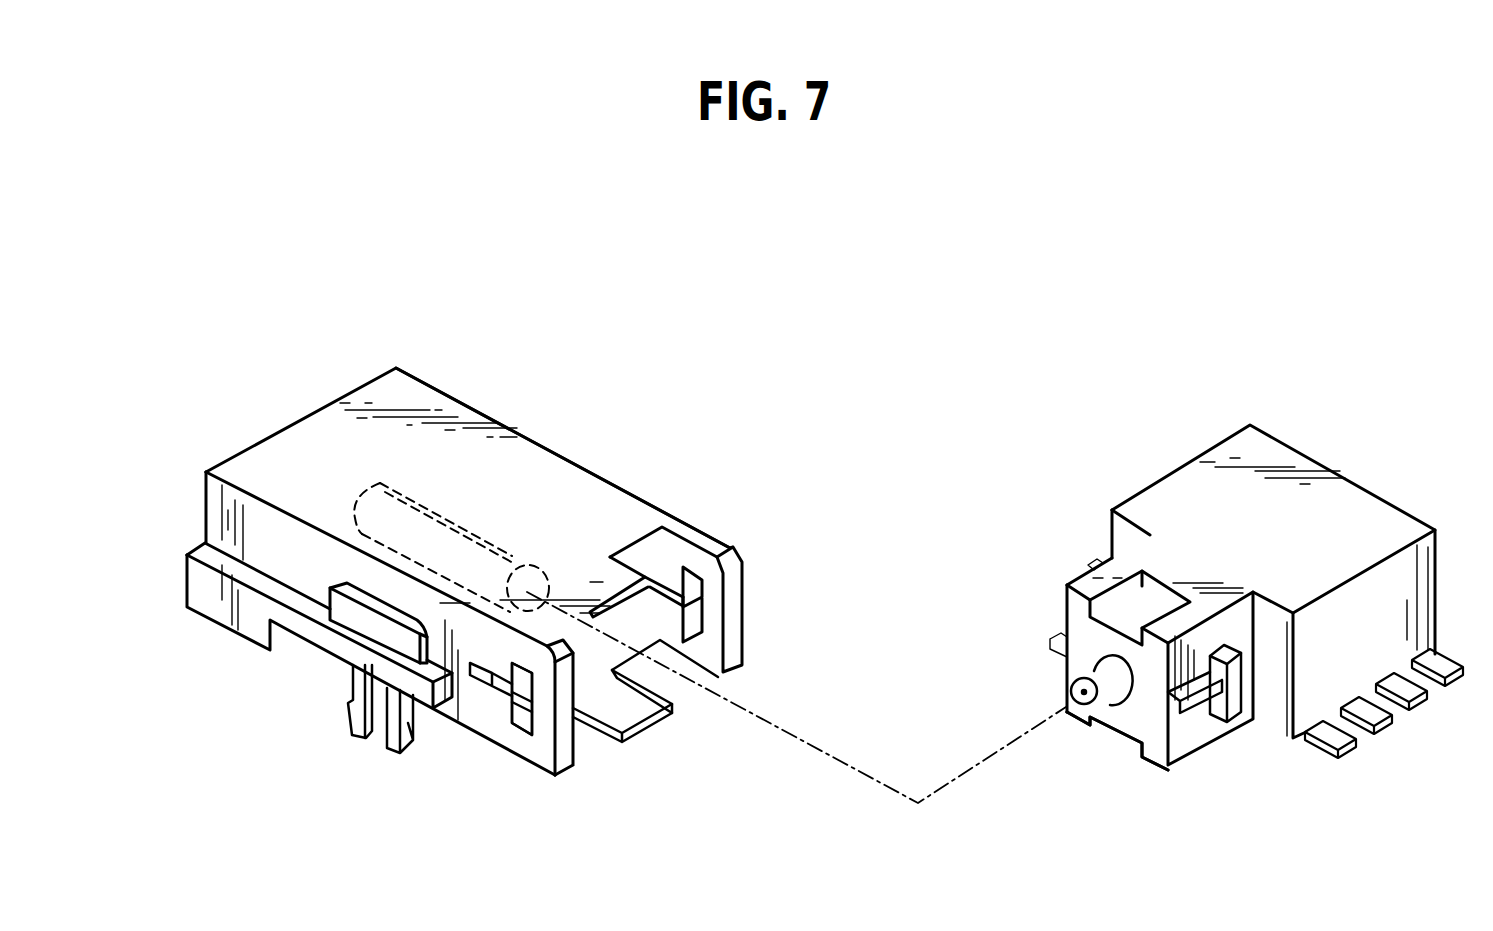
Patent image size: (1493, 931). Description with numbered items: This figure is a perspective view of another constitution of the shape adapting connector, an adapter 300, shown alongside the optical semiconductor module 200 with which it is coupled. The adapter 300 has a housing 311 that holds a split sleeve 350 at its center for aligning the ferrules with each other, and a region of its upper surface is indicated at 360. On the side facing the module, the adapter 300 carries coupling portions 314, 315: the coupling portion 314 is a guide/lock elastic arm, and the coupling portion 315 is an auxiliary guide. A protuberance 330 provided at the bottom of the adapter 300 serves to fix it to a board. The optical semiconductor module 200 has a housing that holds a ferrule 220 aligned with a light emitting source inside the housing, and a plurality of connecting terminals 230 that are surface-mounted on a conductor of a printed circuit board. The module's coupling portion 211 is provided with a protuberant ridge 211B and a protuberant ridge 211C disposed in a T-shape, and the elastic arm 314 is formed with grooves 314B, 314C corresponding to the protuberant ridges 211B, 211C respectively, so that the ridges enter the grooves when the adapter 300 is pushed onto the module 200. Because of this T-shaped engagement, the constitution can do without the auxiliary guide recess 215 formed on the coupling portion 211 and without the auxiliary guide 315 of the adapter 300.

The adapter 300 is at (302, 416).
The upper surface portion of housing 360 is at (528, 423).
The split sleeve 350 is at (473, 535).
The housing 311 is at (597, 475).
The coupling portion 314 is at (705, 538).
The groove 314B is at (495, 688).
The groove 314C is at (513, 727).
The coupling portion 315 is at (630, 720).
The protuberance 330 is at (401, 752).
The optical semiconductor module 200 is at (1152, 468).
The coupling portion 211 is at (1192, 745).
The protuberant ridge 211B is at (1197, 692).
The protuberant ridge 211C is at (1227, 718).
The auxiliary guide recess 215 is at (1133, 608).
The ferrule 220 is at (1090, 658).
The connecting terminals 230 is at (1423, 703).